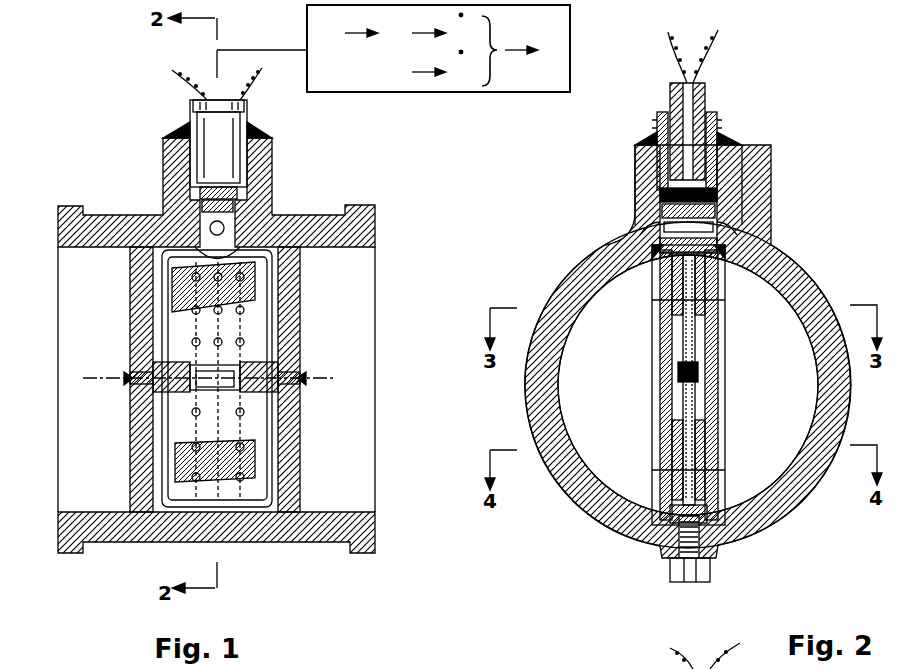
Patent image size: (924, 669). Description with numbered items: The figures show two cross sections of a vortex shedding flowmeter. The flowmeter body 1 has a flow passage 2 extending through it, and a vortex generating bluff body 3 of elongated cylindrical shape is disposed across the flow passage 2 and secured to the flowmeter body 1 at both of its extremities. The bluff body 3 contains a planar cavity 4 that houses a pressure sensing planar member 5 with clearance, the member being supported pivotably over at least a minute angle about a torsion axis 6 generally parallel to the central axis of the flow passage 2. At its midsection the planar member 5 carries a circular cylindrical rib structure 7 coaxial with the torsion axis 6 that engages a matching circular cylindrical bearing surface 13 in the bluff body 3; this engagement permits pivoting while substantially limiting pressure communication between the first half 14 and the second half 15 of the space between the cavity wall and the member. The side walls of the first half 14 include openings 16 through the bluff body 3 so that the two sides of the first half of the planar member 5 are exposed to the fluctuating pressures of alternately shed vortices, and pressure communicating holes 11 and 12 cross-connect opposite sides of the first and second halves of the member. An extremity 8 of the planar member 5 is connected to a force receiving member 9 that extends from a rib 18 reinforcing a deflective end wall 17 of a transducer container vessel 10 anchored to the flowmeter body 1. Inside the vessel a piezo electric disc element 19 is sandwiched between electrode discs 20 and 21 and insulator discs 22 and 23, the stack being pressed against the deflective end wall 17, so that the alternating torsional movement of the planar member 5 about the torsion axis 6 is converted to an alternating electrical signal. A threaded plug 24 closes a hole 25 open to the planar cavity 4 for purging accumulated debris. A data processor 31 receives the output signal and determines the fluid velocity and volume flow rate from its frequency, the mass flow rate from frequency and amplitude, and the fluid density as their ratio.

In FIG. 1, the flowmeter body 1 is at (110, 213).
In FIG. 2, the flowmeter body 1 is at (770, 503).
In FIG. 1, the flow passage 2 is at (82, 460).
In FIG. 2, the flow passage 2 is at (612, 428).
In FIG. 1, the vortex generating bluff body 3 is at (130, 435).
In FIG. 2, the vortex generating bluff body 3 is at (618, 505).
In FIG. 1, the planar cavity 4 is at (268, 505).
In FIG. 1, the pressure sensing planar member 5 is at (243, 395).
In FIG. 2, the pressure sensing planar member 5 is at (738, 500).
In FIG. 1, the torsion axis 6 is at (372, 425).
In FIG. 2, the torsion axis 6 is at (645, 418).
In FIG. 1, the circular cylindrical rib structure 7 is at (320, 382).
In FIG. 2, the circular cylindrical rib structure 7 is at (700, 378).
In FIG. 1, the extremity 8 is at (272, 212).
In FIG. 1, the force receiving member 9 is at (200, 238).
In FIG. 2, the force receiving member 9 is at (685, 245).
In FIG. 1, the transducer container vessel 10 is at (225, 152).
In FIG. 2, the transducer container vessel 10 is at (712, 112).
In FIG. 1, the pressure communicating hole 11 is at (258, 323).
In FIG. 2, the pressure communicating hole 11 is at (655, 370).
In FIG. 1, the pressure communicating hole 12 is at (170, 317).
In FIG. 2, the circular cylindrical bearing surface 13 is at (768, 240).
In FIG. 2, the first half of the space 14 is at (775, 442).
In FIG. 2, the second half of the space 15 is at (662, 305).
In FIG. 2, the openings 16 is at (740, 285).
In FIG. 2, the deflective end wall 17 is at (740, 200).
In FIG. 2, the rib 18 is at (652, 238).
In FIG. 2, the piezo electric disc element 19 is at (658, 163).
In FIG. 2, the electrode disc 20 is at (722, 160).
In FIG. 2, the electrode disc 21 is at (725, 178).
In FIG. 2, the insulator disc 22 is at (657, 118).
In FIG. 2, the insulator disc 23 is at (660, 195).
In FIG. 2, the threaded plug 24 is at (676, 540).
In FIG. 2, the hole 25 is at (660, 510).
In FIG. 1, the data processor 31 is at (430, 92).